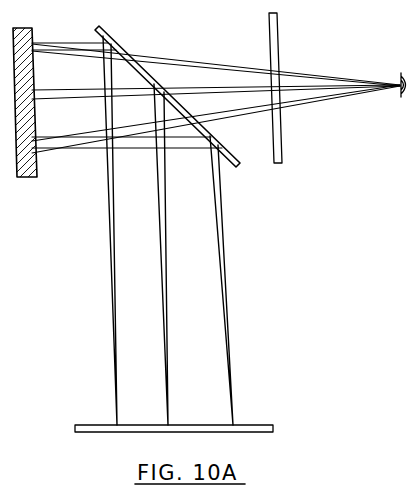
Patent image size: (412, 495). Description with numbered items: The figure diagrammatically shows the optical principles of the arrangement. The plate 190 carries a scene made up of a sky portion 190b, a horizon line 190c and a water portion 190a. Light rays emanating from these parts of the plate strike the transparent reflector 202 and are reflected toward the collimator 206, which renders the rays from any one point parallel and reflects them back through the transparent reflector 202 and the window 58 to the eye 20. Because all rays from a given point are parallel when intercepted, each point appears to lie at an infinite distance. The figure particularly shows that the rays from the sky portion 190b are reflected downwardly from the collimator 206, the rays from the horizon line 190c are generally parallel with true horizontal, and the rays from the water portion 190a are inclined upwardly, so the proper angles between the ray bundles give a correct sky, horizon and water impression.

The viewer's eye 20 is at (403, 120).
The window 58 is at (275, 38).
The plate 190 is at (75, 428).
The water portion 190a is at (236, 424).
The sky portion 190b is at (116, 424).
The horizon line 190c is at (169, 424).
The transparent reflector 202 is at (110, 36).
The collimator 206 is at (36, 160).